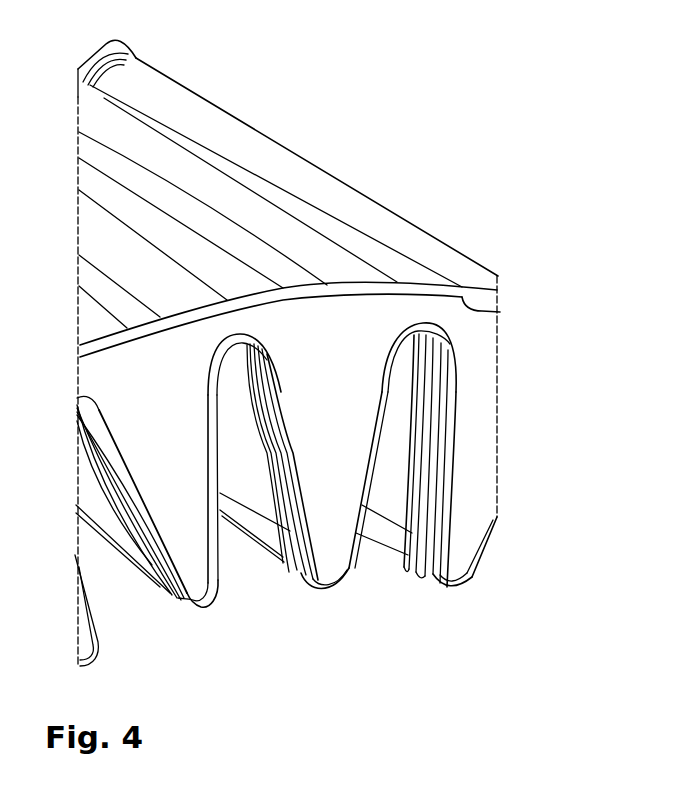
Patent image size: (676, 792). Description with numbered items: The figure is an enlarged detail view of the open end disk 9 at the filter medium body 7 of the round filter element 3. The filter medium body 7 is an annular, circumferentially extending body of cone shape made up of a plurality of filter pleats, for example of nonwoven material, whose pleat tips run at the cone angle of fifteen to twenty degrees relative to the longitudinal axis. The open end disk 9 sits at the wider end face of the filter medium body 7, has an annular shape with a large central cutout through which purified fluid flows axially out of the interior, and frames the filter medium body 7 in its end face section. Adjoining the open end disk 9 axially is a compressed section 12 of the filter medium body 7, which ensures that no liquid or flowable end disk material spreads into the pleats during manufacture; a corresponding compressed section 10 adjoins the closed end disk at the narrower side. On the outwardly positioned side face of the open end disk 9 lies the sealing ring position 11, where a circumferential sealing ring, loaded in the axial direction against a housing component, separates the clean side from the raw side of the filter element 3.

The round filter element 3 is at (356, 104).
The filter medium body 7 is at (231, 131).
The open end disk 9 is at (478, 340).
The compressed section 10 is at (124, 64).
The sealing ring position 11 is at (498, 312).
The compressed section 12 is at (410, 568).